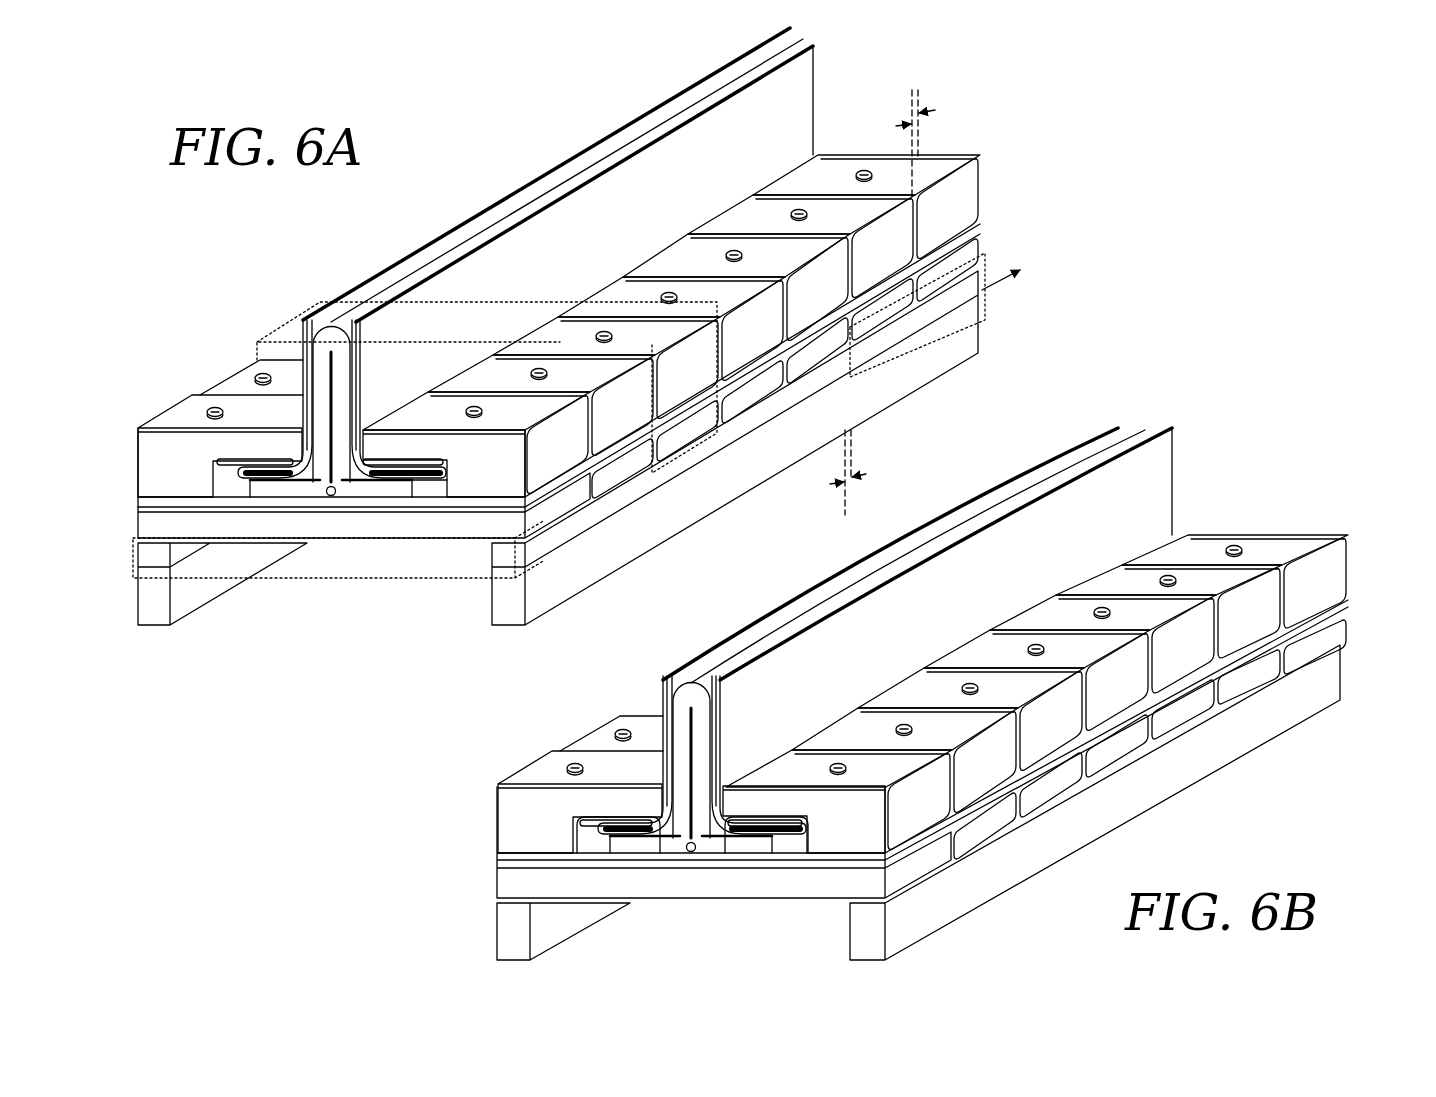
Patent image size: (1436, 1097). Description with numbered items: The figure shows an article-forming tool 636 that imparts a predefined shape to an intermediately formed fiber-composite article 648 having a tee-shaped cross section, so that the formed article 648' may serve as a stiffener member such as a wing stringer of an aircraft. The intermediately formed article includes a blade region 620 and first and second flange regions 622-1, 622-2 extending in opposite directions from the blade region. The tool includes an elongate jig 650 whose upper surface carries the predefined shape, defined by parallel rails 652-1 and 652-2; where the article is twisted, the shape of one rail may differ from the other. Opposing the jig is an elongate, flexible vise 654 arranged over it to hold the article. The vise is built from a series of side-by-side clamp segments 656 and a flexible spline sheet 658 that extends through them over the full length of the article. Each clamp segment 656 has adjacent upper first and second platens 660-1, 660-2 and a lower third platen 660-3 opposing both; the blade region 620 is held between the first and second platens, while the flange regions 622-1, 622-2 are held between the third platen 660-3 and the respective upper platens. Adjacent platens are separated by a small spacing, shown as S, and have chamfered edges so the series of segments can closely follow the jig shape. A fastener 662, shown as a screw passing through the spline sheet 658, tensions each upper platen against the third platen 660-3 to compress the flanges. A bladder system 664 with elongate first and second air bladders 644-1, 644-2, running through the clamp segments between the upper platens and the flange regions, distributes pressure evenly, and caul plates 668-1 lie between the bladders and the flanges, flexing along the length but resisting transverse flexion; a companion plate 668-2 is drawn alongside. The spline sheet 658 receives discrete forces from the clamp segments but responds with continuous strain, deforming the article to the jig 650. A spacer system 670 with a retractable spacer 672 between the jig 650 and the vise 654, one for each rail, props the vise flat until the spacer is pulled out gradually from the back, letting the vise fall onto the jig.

In FIG. 6A, the blade region 620 is at (332, 335).
In FIG. 6A, the first flange region 622-1 is at (387, 488).
In FIG. 6A, the second flange region 622-2 is at (282, 488).
In FIG. 6A, the article-forming tool 636 is at (302, 658).
In FIG. 6B, the article-forming tool 636 is at (1232, 447).
In FIG. 6A, the first air bladder 644-1 is at (422, 458).
In FIG. 6B, the first air bladder 644-1 is at (800, 814).
In FIG. 6A, the second air bladder 644-2 is at (232, 458).
In FIG. 6B, the second air bladder 644-2 is at (580, 814).
In FIG. 6A, the intermediately formed fiber-composite article 648 is at (584, 184).
In FIG. 6B, the formed article 648' is at (917, 539).
In FIG. 6A, the elongate jig 650 is at (132, 545).
In FIG. 6A, the rail 652-1 is at (543, 577).
In FIG. 6B, the rail 652-1 is at (909, 914).
In FIG. 6A, the rail 652-2 is at (183, 583).
In FIG. 6B, the rail 652-2 is at (538, 939).
In FIG. 6A, the flexible vise 654 is at (132, 428).
In FIG. 6B, the flexible vise 654 is at (663, 680).
In FIG. 6A, the clamp segment 656 is at (293, 319).
In FIG. 6A, the flexible spline sheet 658 is at (978, 227).
In FIG. 6B, the flexible spline sheet 658 is at (1350, 608).
In FIG. 6A, the first platen 660-1 is at (515, 459).
In FIG. 6A, the second platen 660-2 is at (208, 459).
In FIG. 6A, the third platen 660-3 is at (360, 534).
In FIG. 6A, the fastener 662 is at (801, 206).
In FIG. 6A, the bladder system 664 is at (430, 482).
In FIG. 6A, the first caul plate 668-1 is at (568, 249).
In FIG. 6A, the rail 668-2 is at (553, 175).
In FIG. 6A, the spacer system 670 is at (985, 310).
In FIG. 6A, the retractable spacer 672 is at (922, 319).